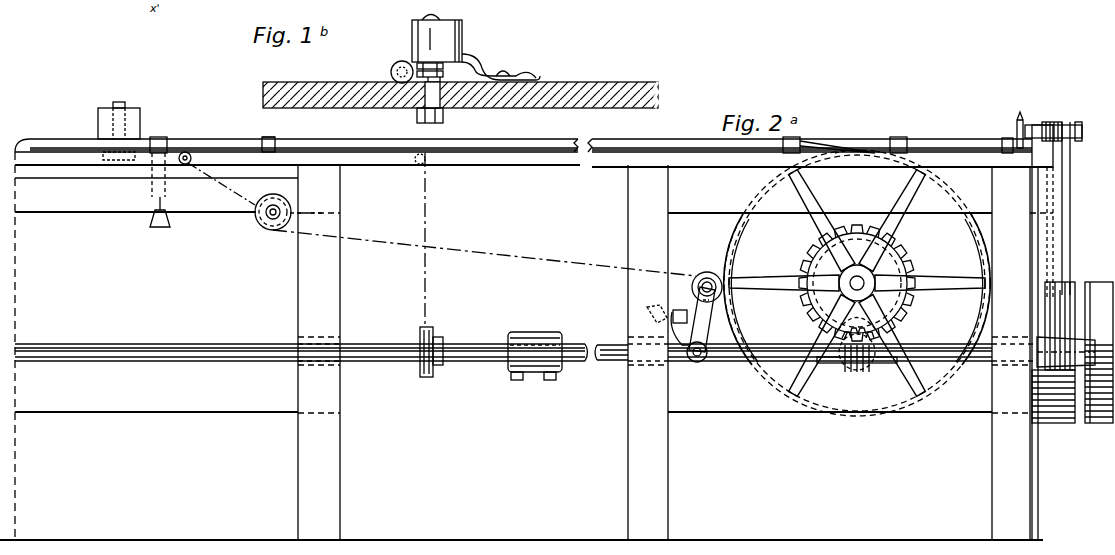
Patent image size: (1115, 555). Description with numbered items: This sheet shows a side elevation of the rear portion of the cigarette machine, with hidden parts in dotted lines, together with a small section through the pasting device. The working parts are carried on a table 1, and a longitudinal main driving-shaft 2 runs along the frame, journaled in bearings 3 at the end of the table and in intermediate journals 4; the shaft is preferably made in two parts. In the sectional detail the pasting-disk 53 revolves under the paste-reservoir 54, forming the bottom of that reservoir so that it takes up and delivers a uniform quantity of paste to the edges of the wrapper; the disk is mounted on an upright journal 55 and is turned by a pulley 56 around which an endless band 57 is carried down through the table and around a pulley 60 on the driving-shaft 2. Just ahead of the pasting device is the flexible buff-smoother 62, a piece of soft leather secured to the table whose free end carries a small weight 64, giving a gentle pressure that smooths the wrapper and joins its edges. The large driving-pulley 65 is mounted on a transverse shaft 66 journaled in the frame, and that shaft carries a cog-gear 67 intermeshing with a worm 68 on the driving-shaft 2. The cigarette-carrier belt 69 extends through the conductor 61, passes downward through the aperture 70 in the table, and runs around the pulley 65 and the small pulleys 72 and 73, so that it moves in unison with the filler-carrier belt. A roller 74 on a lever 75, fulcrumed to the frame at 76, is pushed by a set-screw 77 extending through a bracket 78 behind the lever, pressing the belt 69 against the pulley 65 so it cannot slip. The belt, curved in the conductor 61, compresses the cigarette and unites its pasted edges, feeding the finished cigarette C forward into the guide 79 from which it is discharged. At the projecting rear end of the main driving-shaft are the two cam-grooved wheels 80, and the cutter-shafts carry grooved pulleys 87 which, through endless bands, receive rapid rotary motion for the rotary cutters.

In FIG. 2A, the table 1 is at (548, 426).
In FIG. 2A, the longitudinal main driving-shaft 2 is at (610, 345).
In FIG. 2A, the bearings 3 is at (1010, 355).
In FIG. 2A, the intermediate journals 4 is at (338, 355).
In FIG. 1B, the pasting-disk 53 is at (425, 51).
In FIG. 2A, the paste-reservoir 54 is at (98, 125).
In FIG. 1B, the upright journal 55 is at (438, 17).
In FIG. 2A, the upright journal 55 is at (121, 103).
In FIG. 1B, the pulley 56 is at (445, 78).
In FIG. 2A, the pulley 56 is at (118, 153).
In FIG. 2A, the endless band 57 is at (432, 240).
In FIG. 2A, the pulley 60 is at (431, 361).
In FIG. 1B, the conductor 61 is at (438, 122).
In FIG. 1B, the flexible buff-smoother 62 is at (398, 65).
In FIG. 2A, the flexible buff-smoother 62 is at (160, 137).
In FIG. 2A, the small weight 64 is at (161, 222).
In FIG. 2A, the driving-pulley 65 is at (737, 245).
In FIG. 2A, the transverse shaft 66 is at (865, 283).
In FIG. 2A, the cog-gear 67 is at (902, 297).
In FIG. 2A, the worm 68 is at (857, 355).
In FIG. 2A, the cigarette-carrier belt 69 is at (484, 253).
In FIG. 2A, the aperture 70 is at (185, 152).
In FIG. 2A, the small pulley 72 is at (183, 168).
In FIG. 2A, the small pulley 73 is at (266, 229).
In FIG. 2A, the roller 74 is at (707, 276).
In FIG. 2A, the lever 75 is at (702, 319).
In FIG. 2A, the fulcrum 76 is at (707, 360).
In FIG. 2A, the set-screw 77 is at (651, 308).
In FIG. 2A, the bracket 78 is at (663, 327).
In FIG. 2A, the guide or conductor 79 is at (950, 147).
In FIG. 2A, the cam-grooved wheels or disks 80 is at (1068, 423).
In FIG. 2A, the grooved pulleys 87 is at (1032, 124).
In FIG. 2A, the cigarette C is at (876, 148).